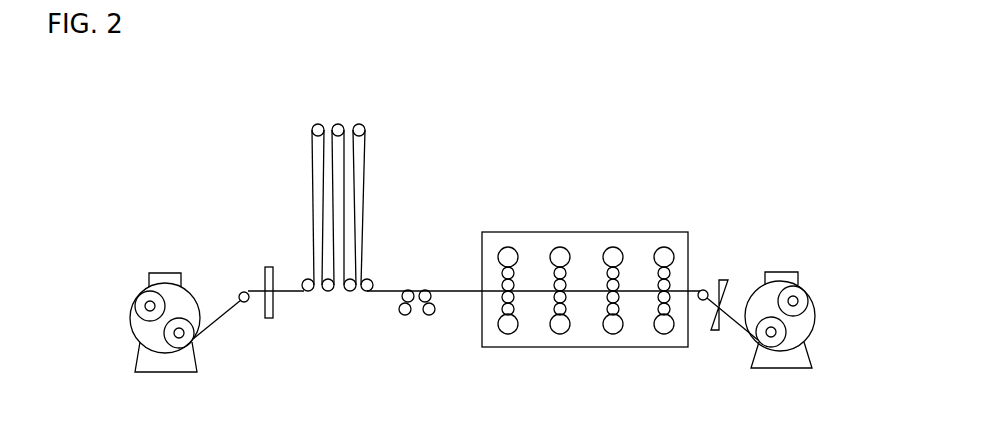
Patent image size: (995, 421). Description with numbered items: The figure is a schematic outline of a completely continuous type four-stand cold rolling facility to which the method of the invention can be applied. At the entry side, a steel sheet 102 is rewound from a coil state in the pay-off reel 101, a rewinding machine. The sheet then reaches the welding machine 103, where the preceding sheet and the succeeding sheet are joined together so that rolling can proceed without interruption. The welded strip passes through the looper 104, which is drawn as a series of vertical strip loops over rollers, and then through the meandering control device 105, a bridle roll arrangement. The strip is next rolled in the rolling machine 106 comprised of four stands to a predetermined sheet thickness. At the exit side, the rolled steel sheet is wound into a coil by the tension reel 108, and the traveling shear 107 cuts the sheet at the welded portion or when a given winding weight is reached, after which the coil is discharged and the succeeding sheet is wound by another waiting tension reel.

The pay-off reel 101 is at (142, 288).
The steel sheet 102 is at (221, 306).
The welding machine 103 is at (269, 318).
The looper 104 is at (367, 105).
The meandering control device (bridle roll) 105 is at (433, 323).
The rolling machine of 4 stands 106 is at (677, 227).
The traveling shear 107 is at (715, 335).
The tension reel 108 is at (803, 287).